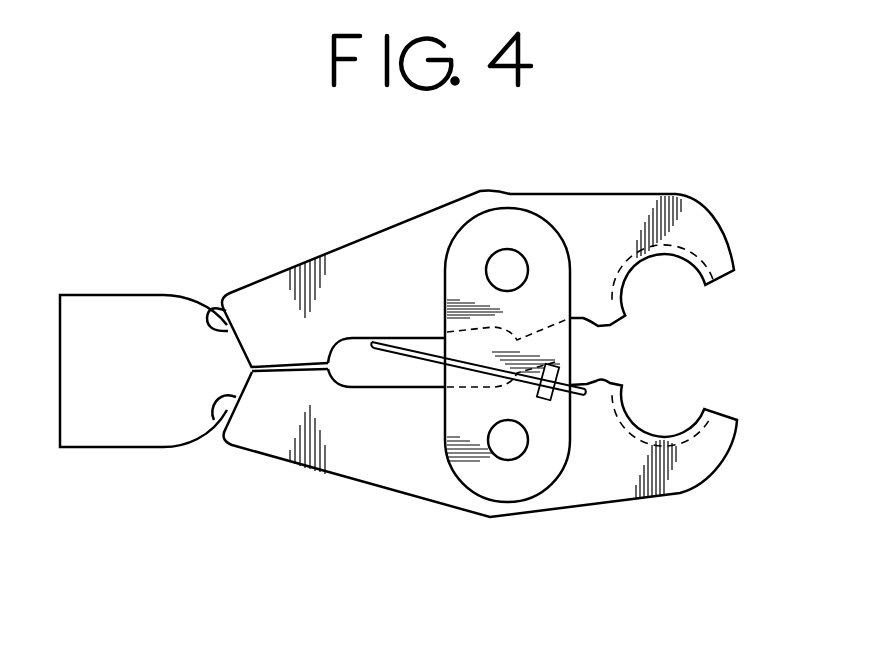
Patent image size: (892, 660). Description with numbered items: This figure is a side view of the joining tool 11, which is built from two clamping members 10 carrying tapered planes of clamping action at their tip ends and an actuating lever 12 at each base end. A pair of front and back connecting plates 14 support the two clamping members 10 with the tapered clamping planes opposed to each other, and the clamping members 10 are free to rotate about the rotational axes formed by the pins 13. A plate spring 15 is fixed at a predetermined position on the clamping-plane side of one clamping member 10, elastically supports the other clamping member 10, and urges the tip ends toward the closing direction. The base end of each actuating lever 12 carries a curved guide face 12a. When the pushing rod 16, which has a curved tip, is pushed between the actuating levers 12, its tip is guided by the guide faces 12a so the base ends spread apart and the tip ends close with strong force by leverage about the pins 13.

The clamping member 10 is at (691, 190).
The joining tool 11 is at (389, 170).
The actuating lever 12 is at (266, 298).
The guide face 12a is at (207, 318).
The pin 13 is at (507, 258).
The connecting plate 14 is at (550, 240).
The plate spring 15 is at (399, 353).
The pushing rod 16 is at (99, 437).